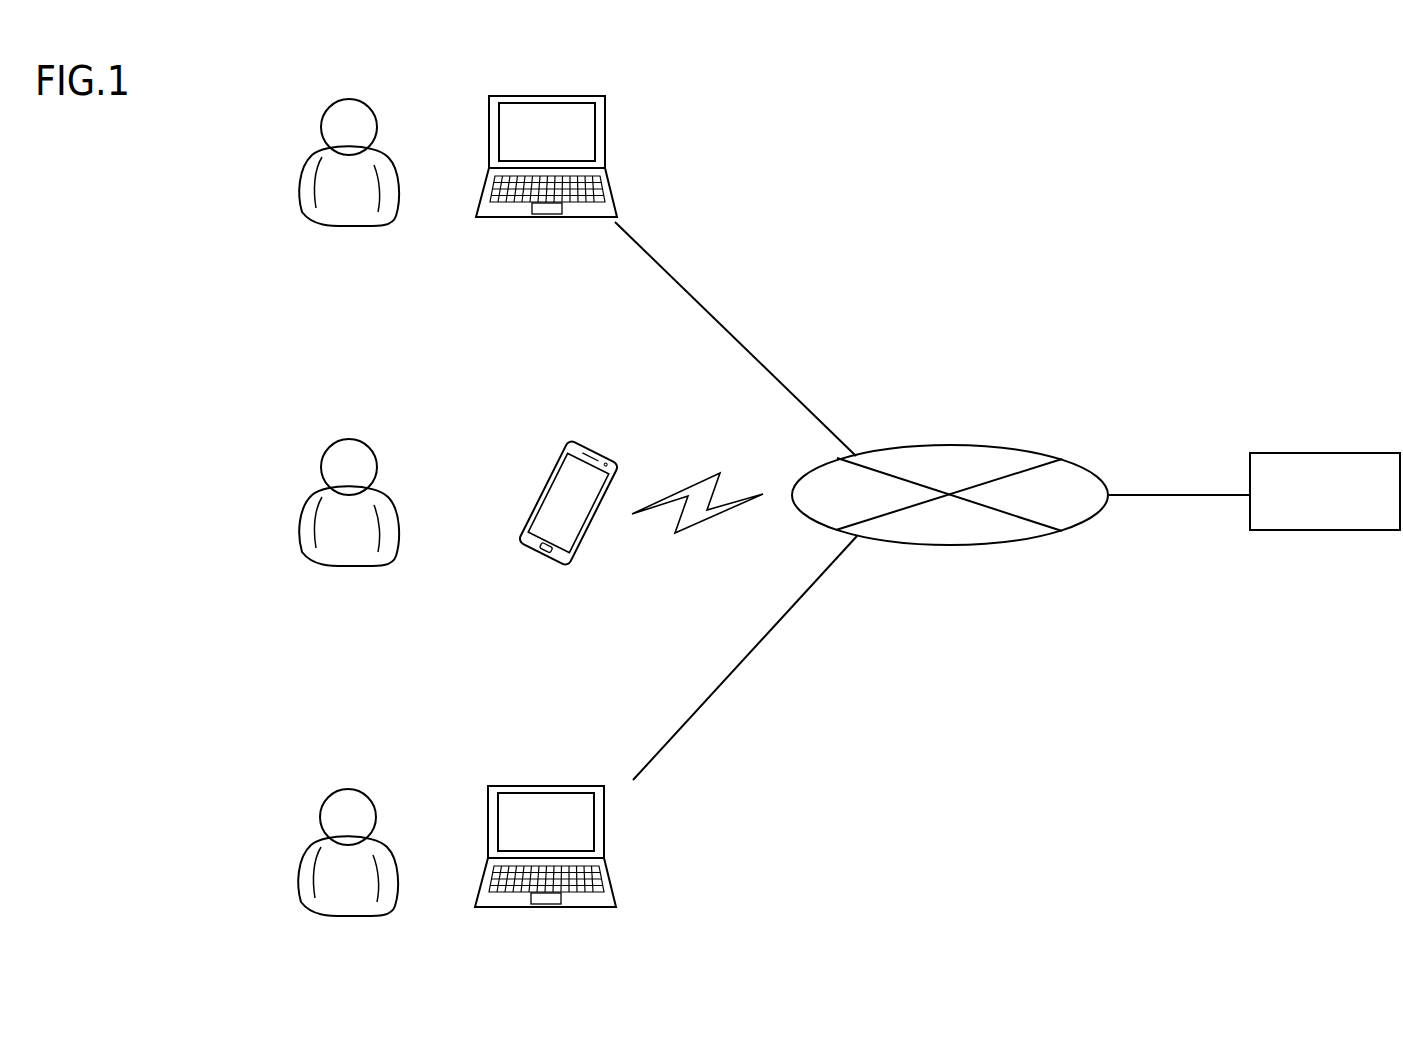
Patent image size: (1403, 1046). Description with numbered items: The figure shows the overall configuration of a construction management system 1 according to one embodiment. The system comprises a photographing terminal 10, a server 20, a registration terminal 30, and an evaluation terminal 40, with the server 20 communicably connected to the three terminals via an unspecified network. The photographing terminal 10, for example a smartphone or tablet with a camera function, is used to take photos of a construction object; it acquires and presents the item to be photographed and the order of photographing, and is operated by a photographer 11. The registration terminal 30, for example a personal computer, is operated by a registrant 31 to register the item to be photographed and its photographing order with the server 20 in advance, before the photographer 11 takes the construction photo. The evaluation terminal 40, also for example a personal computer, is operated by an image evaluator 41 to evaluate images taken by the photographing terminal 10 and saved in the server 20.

The construction management system 1 is at (735, 409).
The photographing terminal 10 is at (536, 497).
The photographer 11 is at (300, 518).
The server 20 is at (1320, 453).
The registration terminal 30 is at (489, 158).
The registrant 31 is at (300, 178).
The evaluation terminal 40 is at (489, 848).
The image evaluator 41 is at (300, 868).